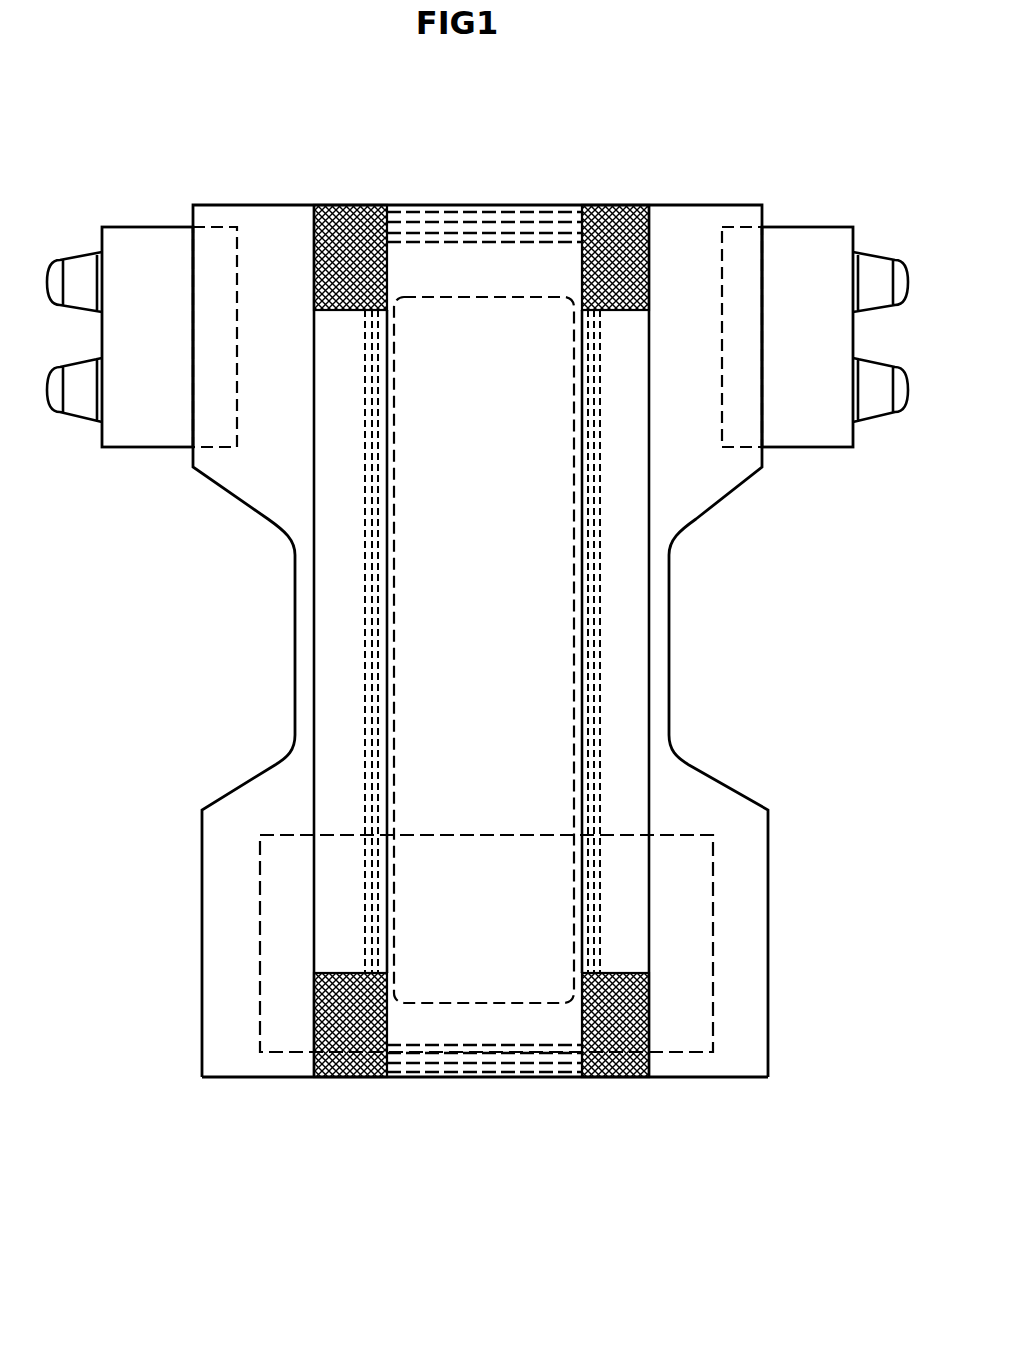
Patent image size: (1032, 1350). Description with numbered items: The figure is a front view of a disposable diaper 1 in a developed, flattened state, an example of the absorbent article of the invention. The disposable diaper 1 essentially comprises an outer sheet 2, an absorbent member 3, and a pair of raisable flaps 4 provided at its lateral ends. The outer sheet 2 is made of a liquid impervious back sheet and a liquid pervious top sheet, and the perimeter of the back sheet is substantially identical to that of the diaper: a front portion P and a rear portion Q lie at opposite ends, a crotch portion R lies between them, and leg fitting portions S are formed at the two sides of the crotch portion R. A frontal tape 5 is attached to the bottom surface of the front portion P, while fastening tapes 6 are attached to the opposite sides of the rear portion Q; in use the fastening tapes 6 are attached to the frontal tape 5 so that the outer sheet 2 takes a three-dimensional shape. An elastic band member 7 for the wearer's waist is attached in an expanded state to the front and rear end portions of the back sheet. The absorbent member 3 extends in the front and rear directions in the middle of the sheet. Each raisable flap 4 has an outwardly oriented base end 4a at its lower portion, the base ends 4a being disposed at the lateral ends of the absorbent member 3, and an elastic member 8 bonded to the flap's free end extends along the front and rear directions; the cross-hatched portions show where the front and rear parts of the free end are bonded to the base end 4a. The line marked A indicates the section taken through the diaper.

The disposable diaper 1 is at (738, 186).
The outer sheet 2 is at (780, 846).
The absorbent member 3 is at (457, 327).
The raisable flap 4 is at (340, 908).
The base end 4a is at (368, 439).
The frontal tape 5 is at (713, 957).
The fastening tapes 6 is at (135, 427).
The elastic band member 7 is at (513, 216).
The elastic member 8 is at (377, 550).
The rear portion Q is at (268, 248).
The crotch portion R is at (307, 742).
The leg fitting portions S is at (295, 680).
The front portion P is at (747, 1057).
The section line A- A is at (276, 643).